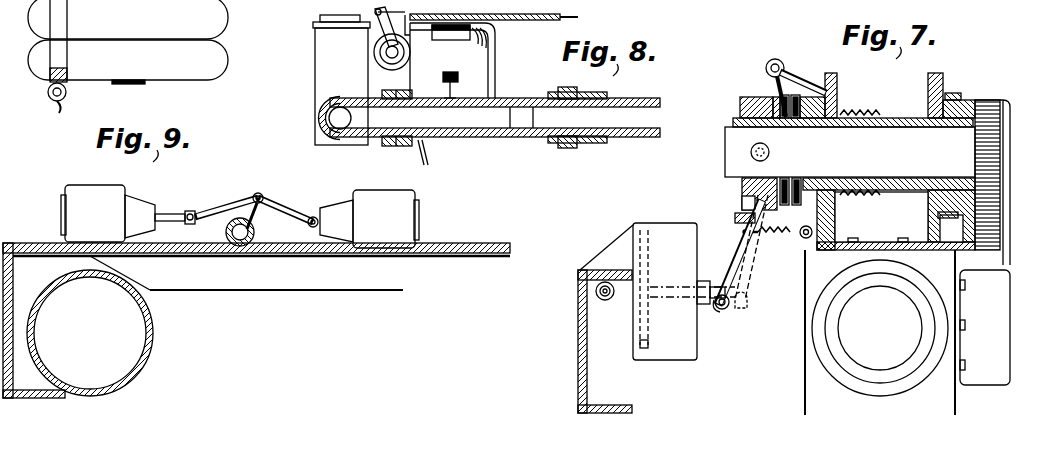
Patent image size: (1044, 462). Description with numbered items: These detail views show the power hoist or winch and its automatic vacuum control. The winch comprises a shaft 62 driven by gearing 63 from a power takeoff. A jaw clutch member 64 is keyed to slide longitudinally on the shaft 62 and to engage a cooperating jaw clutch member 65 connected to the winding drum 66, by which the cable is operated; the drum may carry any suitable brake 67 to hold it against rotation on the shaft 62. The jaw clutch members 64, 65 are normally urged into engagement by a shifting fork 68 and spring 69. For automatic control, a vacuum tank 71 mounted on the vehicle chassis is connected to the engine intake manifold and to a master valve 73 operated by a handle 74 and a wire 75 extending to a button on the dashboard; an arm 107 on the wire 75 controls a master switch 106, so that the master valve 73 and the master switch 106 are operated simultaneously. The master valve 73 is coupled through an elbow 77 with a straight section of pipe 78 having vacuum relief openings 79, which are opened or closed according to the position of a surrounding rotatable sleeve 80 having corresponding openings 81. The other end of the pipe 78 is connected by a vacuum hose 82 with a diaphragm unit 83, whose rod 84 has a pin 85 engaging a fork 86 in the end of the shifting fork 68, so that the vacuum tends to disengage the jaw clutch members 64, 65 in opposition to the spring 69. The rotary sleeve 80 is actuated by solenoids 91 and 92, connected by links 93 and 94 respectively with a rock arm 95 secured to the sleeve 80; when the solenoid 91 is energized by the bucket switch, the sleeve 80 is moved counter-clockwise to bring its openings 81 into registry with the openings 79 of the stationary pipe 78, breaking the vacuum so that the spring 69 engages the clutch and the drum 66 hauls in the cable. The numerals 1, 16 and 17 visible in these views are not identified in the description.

In FIG. 9, the base plate 1 is at (22, 226).
In FIG. 9, the pipe end 16 is at (58, 104).
In FIG. 9, the pipe fitting 17 is at (47, 94).
In FIG. 7, the shaft 62 is at (735, 152).
In FIG. 7, the gearing 63 is at (948, 228).
In FIG. 7, the jaw clutch member 64 is at (745, 113).
In FIG. 7, the jaw clutch member 65 is at (798, 104).
In FIG. 7, the winding drum 66 is at (890, 112).
In FIG. 7, the brake 67 is at (950, 99).
In FIG. 7, the shifting fork 68 is at (762, 99).
In FIG. 7, the spring 69 is at (798, 242).
In FIG. 9, the vacuum tank 71 is at (149, 335).
In FIG. 8, the master valve 73 is at (335, 48).
In FIG. 8, the handle 74 is at (375, 9).
In FIG. 8, the wire 75 is at (418, 16).
In FIG. 8, the elbow 77 is at (333, 118).
In FIG. 9, the pipe 78 is at (239, 247).
In FIG. 8, the pipe 78 is at (396, 140).
In FIG. 9, the vacuum relief openings 79 is at (236, 249).
In FIG. 8, the vacuum relief openings 79 is at (531, 108).
In FIG. 9, the rotatable sleeve 80 is at (230, 226).
In FIG. 8, the rotatable sleeve 80 is at (515, 100).
In FIG. 9, the openings 81 is at (250, 205).
In FIG. 8, the vacuum hose 82 is at (648, 140).
In FIG. 7, the vacuum hose 82 is at (597, 292).
In FIG. 7, the diaphragm unit 83 is at (640, 344).
In FIG. 7, the rod 84 is at (724, 318).
In FIG. 8, the pin 85 is at (455, 80).
In FIG. 7, the pin 85 is at (741, 315).
In FIG. 7, the fork 86 is at (744, 303).
In FIG. 9, the solenoid 91 is at (78, 202).
In FIG. 9, the solenoid 92 is at (409, 215).
In FIG. 9, the link 93 is at (213, 208).
In FIG. 9, the link 94 is at (298, 210).
In FIG. 9, the rock arm 95 is at (255, 220).
In FIG. 8, the master switch 106 is at (450, 43).
In FIG. 8, the arm 107 is at (458, 51).